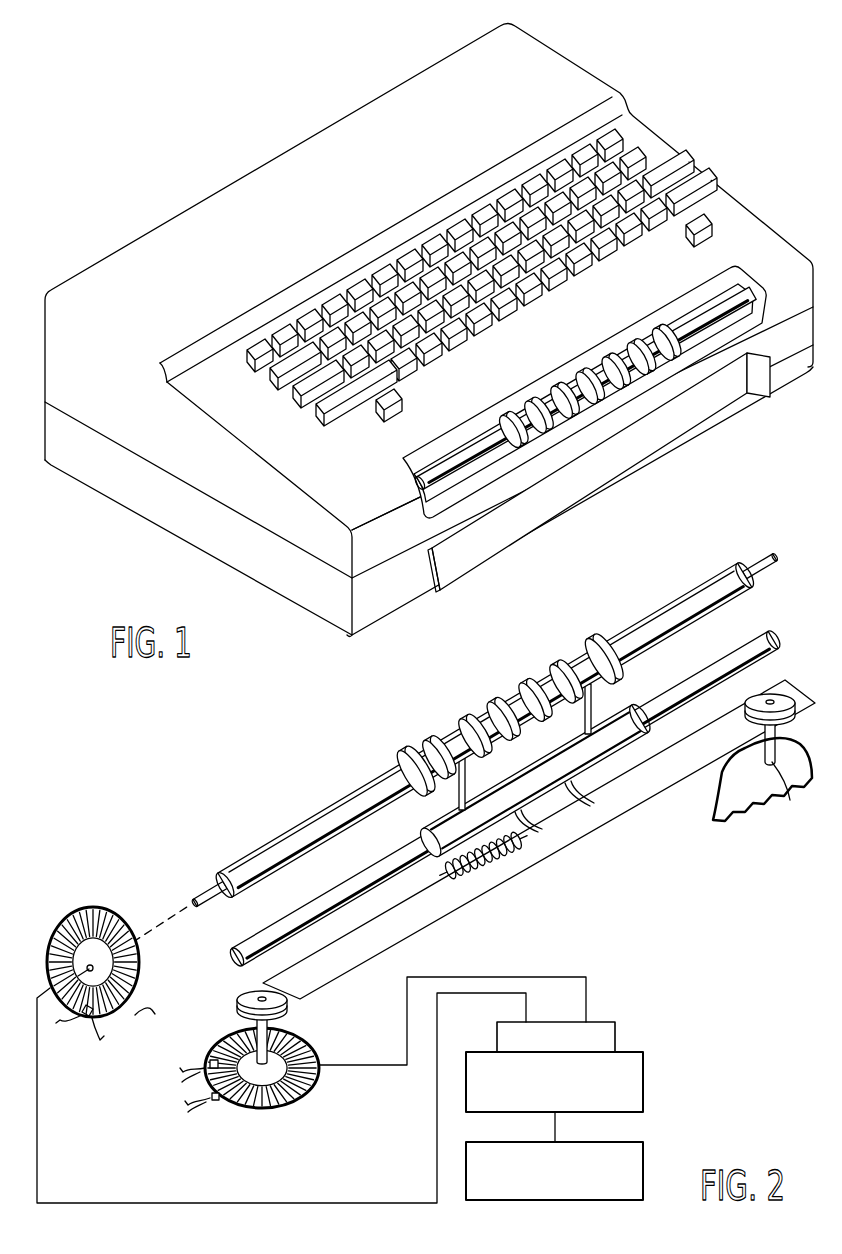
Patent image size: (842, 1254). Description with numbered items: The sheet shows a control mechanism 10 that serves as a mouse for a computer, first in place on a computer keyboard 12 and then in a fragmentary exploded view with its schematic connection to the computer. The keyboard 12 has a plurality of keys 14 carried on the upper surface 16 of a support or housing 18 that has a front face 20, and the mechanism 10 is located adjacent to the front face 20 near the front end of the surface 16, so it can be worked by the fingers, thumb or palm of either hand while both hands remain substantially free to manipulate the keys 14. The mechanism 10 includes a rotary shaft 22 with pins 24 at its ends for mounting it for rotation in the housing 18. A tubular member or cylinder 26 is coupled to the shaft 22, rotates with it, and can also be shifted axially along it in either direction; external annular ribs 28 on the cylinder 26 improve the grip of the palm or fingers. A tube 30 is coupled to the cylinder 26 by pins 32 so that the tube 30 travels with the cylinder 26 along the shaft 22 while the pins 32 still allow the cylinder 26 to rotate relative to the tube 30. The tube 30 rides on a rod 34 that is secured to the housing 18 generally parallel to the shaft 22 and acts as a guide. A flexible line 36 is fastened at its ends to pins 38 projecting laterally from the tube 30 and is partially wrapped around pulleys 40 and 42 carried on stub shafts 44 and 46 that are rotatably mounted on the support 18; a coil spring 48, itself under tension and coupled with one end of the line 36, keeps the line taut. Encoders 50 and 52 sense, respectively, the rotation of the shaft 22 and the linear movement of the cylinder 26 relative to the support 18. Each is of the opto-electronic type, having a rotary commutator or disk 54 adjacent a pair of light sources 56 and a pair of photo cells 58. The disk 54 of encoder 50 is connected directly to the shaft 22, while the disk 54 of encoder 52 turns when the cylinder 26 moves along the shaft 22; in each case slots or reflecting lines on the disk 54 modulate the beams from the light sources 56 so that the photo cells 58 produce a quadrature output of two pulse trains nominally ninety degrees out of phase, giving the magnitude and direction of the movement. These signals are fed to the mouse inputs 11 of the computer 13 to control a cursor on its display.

In FIG. 1, the control mechanism 10 is at (597, 420).
In FIG. 2, the control mechanism 10 is at (466, 712).
In FIG. 2, the mouse inputs 11 is at (616, 1037).
In FIG. 1, the computer keyboard 12 is at (727, 200).
In FIG. 2, the computer 13 is at (644, 1092).
In FIG. 1, the keys 14 is at (410, 258).
In FIG. 1, the upper surface 16 is at (361, 497).
In FIG. 1, the housing 18 is at (183, 502).
In FIG. 1, the front face 20 is at (398, 615).
In FIG. 1, the rotary shaft 22 is at (462, 472).
In FIG. 2, the rotary shaft 22 is at (318, 815).
In FIG. 2, the pins 24 is at (198, 900).
In FIG. 1, the cylinder 26 is at (575, 415).
In FIG. 2, the cylinder 26 is at (437, 742).
In FIG. 2, the annular ribs 28 is at (600, 645).
In FIG. 2, the tube 30 is at (568, 825).
In FIG. 2, the pins 32 is at (440, 800).
In FIG. 2, the rod 34 is at (232, 958).
In FIG. 2, the flexible line 36 is at (455, 913).
In FIG. 2, the pins 38 is at (585, 820).
In FIG. 2, the pulley 40 is at (280, 1045).
In FIG. 2, the pulley 42 is at (785, 696).
In FIG. 2, the stub shaft 44 is at (238, 1003).
In FIG. 2, the stub shaft 46 is at (780, 790).
In FIG. 2, the coil spring 48 is at (492, 870).
In FIG. 2, the encoder 50 is at (83, 886).
In FIG. 2, the encoder 52 is at (313, 1101).
In FIG. 2, the disk 54 is at (72, 910).
In FIG. 2, the light sources 56 is at (86, 1012).
In FIG. 2, the photo cells 58 is at (219, 1100).